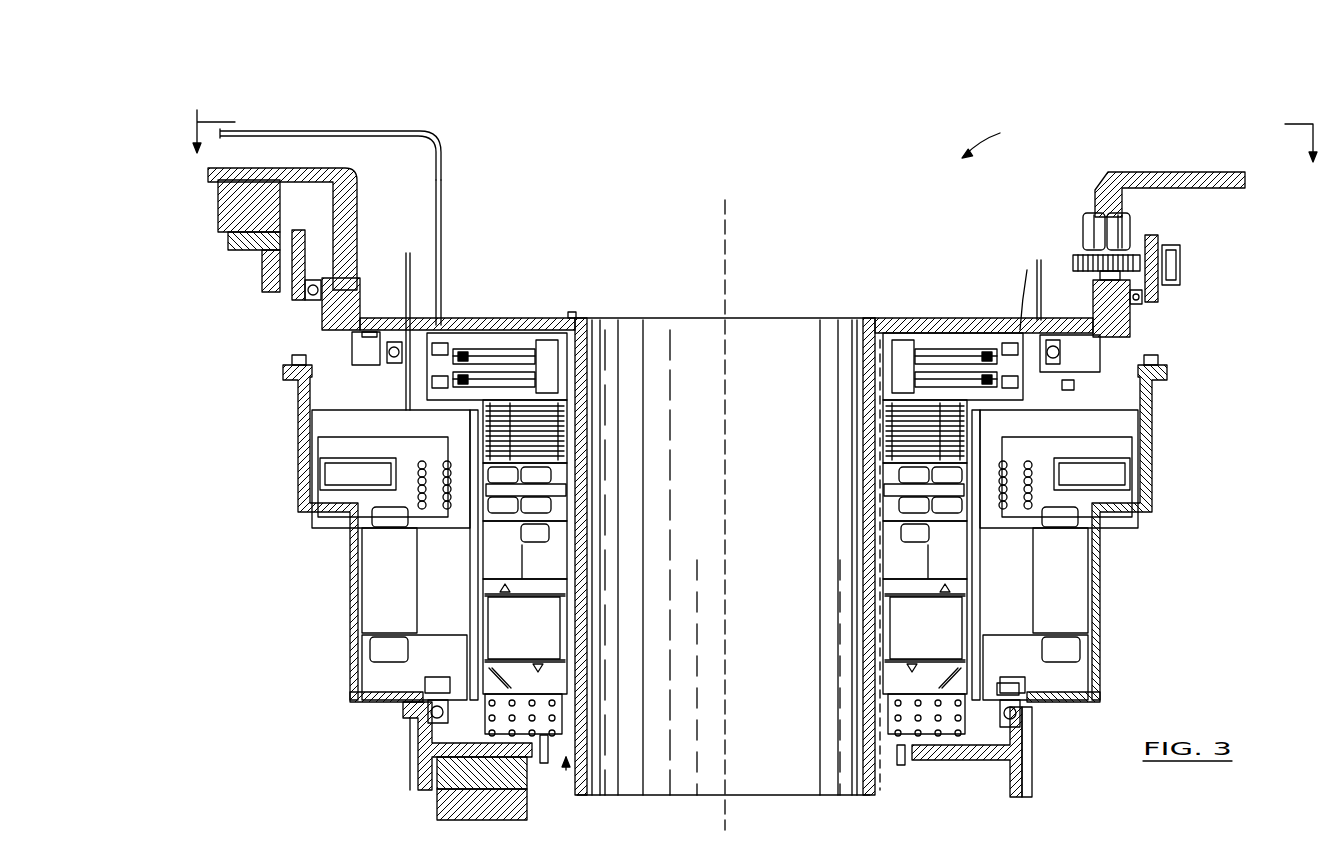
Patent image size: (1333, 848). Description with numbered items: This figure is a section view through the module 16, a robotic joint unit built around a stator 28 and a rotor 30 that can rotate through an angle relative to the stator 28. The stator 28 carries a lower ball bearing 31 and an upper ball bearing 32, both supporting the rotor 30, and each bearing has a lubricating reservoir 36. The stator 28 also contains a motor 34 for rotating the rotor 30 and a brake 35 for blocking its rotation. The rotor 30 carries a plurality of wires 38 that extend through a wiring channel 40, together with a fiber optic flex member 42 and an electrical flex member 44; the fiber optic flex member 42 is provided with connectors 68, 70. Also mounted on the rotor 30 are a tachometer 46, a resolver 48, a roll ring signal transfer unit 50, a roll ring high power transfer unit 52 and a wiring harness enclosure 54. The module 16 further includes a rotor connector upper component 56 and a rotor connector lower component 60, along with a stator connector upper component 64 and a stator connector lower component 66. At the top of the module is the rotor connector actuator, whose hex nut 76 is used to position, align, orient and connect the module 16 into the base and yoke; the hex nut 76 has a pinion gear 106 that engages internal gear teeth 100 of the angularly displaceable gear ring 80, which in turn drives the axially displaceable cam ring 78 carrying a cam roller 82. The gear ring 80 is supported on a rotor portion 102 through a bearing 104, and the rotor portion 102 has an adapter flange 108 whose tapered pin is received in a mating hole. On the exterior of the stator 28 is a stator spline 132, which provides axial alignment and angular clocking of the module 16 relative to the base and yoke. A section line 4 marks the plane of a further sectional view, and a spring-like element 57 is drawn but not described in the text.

The section line 4- 4 is at (755, 130).
The module 16 is at (994, 139).
The stator 28 is at (418, 745).
The rotor 30 is at (443, 172).
The lower ball bearing 31 is at (1030, 722).
The upper ball bearing 32 is at (1062, 350).
The motor 34 is at (372, 580).
The brake 35 is at (1127, 450).
The lubricating reservoirs 36 is at (1068, 386).
The wires 38 is at (892, 788).
The wiring channel 40 is at (566, 770).
The fiber optic flex member 42 is at (560, 705).
The electrical flex member 44 is at (556, 624).
The tachometer 46 is at (560, 552).
The resolver 48 is at (562, 492).
The roll ring signal transfer unit 50 is at (567, 440).
The roll ring high power transfer unit 52 is at (575, 373).
The wiring harness enclosure 54 is at (443, 240).
The rotor connector upper component 56 is at (278, 200).
The spring contact 57 is at (1027, 285).
The rotor connector lower component 60 is at (282, 222).
The stator connector upper component 64 is at (438, 772).
The stator connector lower component 66 is at (440, 815).
The connector 68 is at (545, 766).
The connector 70 is at (905, 765).
The hex nut 76 is at (1085, 228).
The cam ring 78 is at (266, 280).
The gear ring 80 is at (300, 300).
The cam roller 82 is at (1182, 262).
The internal gear teeth 100 is at (1142, 250).
The rotor portion 102 is at (362, 318).
The bearing 104 is at (1142, 325).
The pinion gear 106 is at (1073, 262).
The adapter flange 108 is at (278, 168).
The stator spline 132 is at (1032, 778).